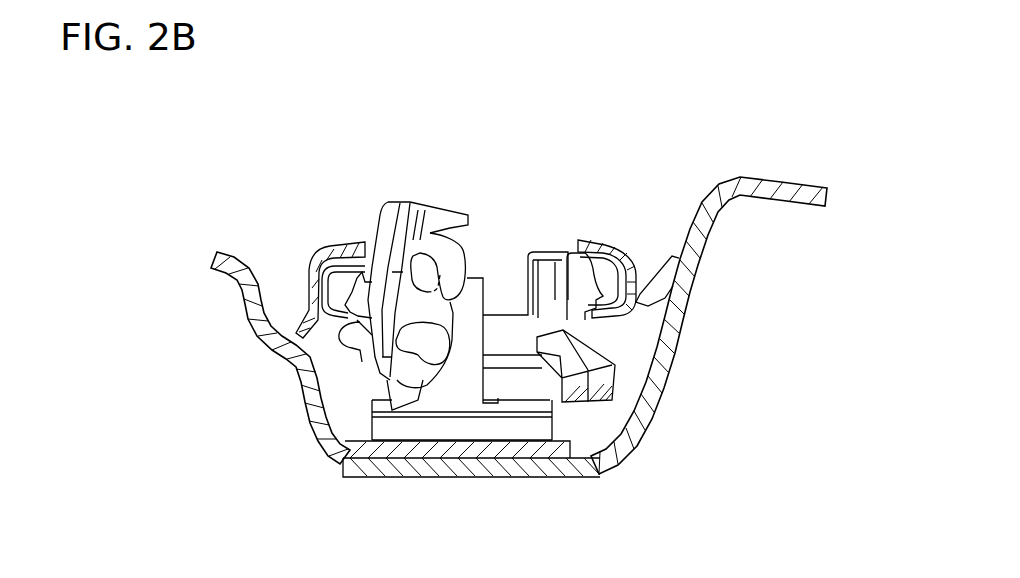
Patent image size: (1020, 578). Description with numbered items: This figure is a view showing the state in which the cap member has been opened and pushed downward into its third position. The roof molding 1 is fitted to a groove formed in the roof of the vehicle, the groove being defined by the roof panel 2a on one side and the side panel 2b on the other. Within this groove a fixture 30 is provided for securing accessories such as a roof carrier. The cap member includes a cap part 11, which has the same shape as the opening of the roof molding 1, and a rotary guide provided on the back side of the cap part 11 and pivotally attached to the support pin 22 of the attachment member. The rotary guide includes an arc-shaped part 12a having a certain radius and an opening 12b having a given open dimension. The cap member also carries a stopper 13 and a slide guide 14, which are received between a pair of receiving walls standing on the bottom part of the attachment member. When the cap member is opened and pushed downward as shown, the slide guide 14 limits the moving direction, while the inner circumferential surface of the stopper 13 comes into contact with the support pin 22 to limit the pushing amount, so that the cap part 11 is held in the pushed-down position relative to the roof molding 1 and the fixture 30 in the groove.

The roof molding 1 is at (605, 243).
The roof panel 2a is at (300, 388).
The side panel 2b is at (680, 338).
The cap part 11 is at (390, 210).
The arc-shaped part 12a is at (420, 353).
The opening 12b is at (410, 325).
The stopper 13 is at (422, 265).
The slide guide 14 is at (450, 287).
The support pin 22 is at (443, 230).
The fixture 30 is at (447, 387).